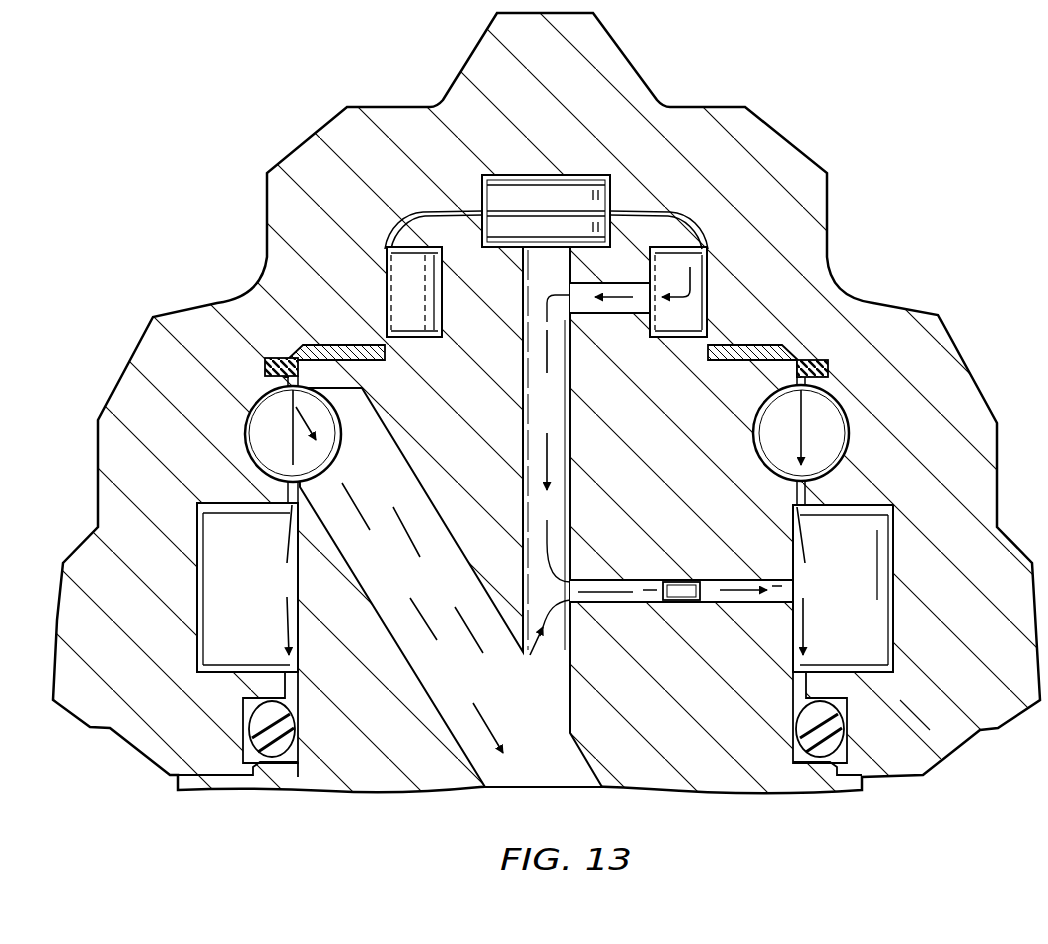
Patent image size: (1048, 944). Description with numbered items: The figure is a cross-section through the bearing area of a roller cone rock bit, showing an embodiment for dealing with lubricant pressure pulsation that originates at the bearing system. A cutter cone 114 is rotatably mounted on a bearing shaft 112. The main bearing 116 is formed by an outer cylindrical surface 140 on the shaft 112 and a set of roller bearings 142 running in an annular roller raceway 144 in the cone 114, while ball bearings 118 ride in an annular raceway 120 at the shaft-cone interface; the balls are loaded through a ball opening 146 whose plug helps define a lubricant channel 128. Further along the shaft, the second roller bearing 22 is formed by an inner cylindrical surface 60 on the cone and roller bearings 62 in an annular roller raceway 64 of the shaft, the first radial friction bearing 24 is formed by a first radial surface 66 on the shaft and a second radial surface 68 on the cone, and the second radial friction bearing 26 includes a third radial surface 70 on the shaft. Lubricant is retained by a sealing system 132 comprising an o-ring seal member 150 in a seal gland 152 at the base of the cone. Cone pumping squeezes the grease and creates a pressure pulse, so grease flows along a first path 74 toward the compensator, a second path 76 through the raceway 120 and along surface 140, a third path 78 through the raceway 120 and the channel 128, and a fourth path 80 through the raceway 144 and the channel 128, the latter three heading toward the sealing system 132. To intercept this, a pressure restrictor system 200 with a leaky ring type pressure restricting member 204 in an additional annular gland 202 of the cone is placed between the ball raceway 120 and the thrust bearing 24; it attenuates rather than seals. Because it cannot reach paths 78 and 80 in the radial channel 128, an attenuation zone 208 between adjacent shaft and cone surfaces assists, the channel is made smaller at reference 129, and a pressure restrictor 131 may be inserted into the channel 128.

The cone 114 is at (702, 82).
The second radial friction bearing 26 is at (513, 160).
The second radial surface 68 is at (570, 212).
The second roller bearing 22 is at (713, 277).
The first radial friction bearing 24 is at (755, 330).
The ball bearings 118 is at (815, 398).
The inner cylindrical surface 60 is at (386, 287).
The annular roller raceway 64 is at (442, 278).
The roller bearings 62 is at (437, 320).
The first radial surface 66 is at (330, 345).
The annular gland 202 is at (277, 358).
The pressure restricting member 204 is at (263, 367).
The pressure restrictor system 200 is at (250, 380).
The lubricant channel 128 is at (395, 478).
The third radial surface 70 is at (553, 215).
The fourth path 80 is at (547, 448).
The third path 78 is at (512, 675).
The first path 74 is at (517, 727).
The smaller channel portion 129 is at (745, 603).
The pressure restrictor 131 is at (687, 580).
The second path 76 is at (287, 540).
The outer cylindrical surface 140 is at (800, 547).
The roller bearings 142 is at (895, 593).
The annular roller raceway 144 is at (887, 633).
The main bearing 116 is at (903, 540).
The attenuation zone 208 is at (767, 497).
The annular raceway 120 is at (848, 465).
The ball opening 146 is at (470, 743).
The seal gland 152 is at (835, 697).
The seal member 150 is at (833, 743).
The bearing shaft 112 is at (372, 701).
The sealing system 132 is at (923, 704).